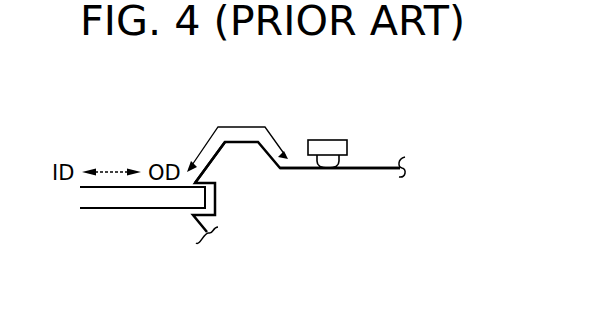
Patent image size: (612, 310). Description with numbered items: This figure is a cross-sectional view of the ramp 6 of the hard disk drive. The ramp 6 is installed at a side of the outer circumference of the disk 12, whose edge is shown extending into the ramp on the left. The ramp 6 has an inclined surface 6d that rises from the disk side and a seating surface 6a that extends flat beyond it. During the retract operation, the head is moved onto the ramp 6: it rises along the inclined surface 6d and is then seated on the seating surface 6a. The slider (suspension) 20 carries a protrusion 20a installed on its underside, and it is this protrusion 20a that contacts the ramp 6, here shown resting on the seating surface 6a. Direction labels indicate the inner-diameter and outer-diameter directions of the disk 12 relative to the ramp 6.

The ramp 6 is at (362, 160).
The seating surface 6a is at (378, 170).
The inclined surface 6d is at (216, 154).
The disk 12 is at (127, 210).
The slider (suspension) 20 is at (330, 139).
The protrusion 20a is at (330, 170).